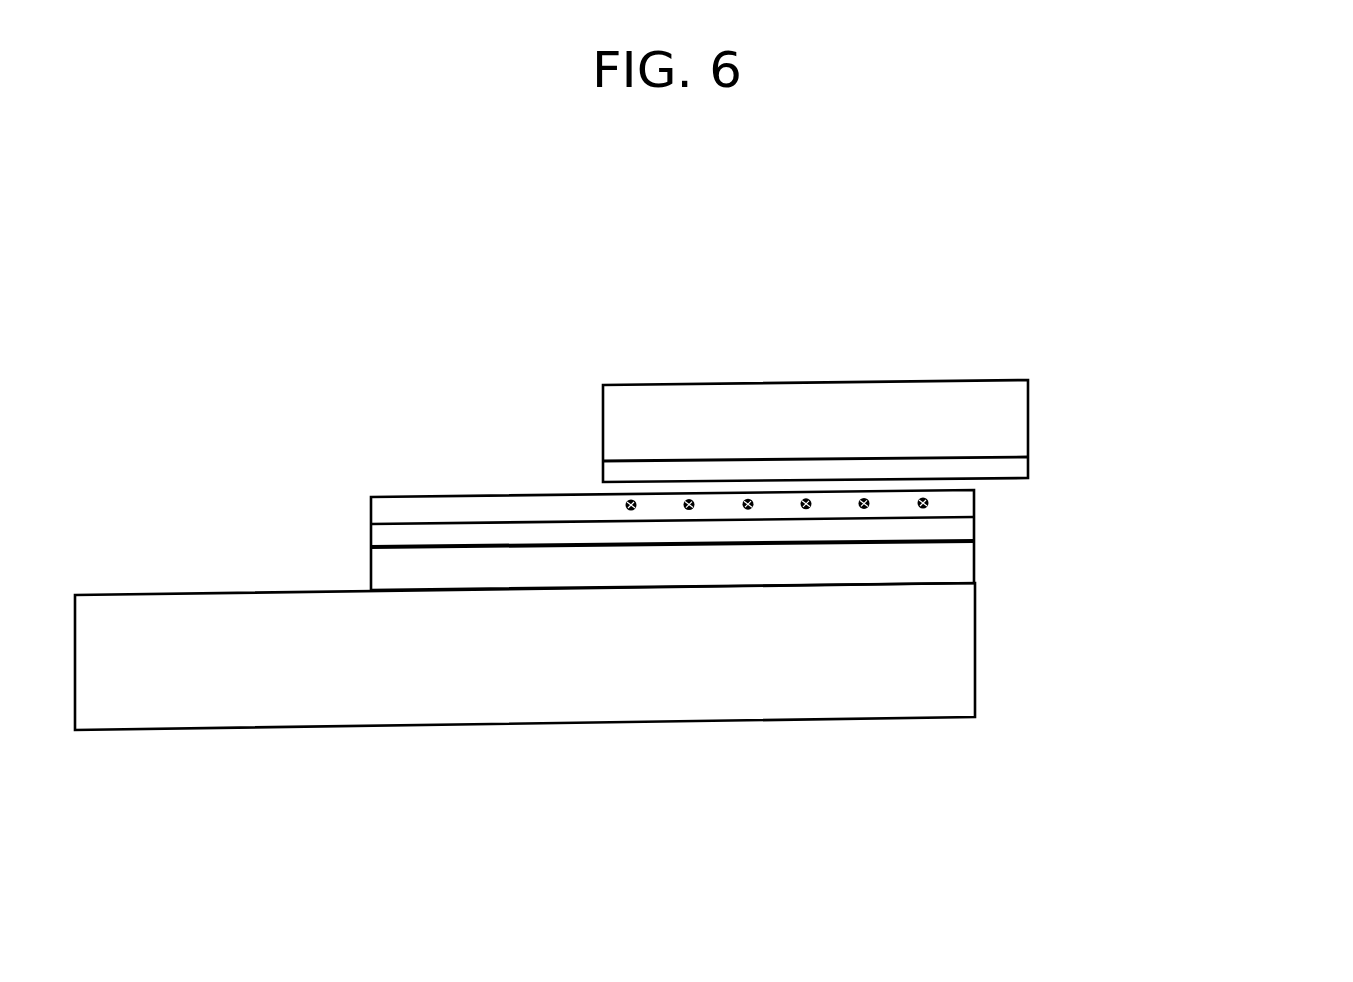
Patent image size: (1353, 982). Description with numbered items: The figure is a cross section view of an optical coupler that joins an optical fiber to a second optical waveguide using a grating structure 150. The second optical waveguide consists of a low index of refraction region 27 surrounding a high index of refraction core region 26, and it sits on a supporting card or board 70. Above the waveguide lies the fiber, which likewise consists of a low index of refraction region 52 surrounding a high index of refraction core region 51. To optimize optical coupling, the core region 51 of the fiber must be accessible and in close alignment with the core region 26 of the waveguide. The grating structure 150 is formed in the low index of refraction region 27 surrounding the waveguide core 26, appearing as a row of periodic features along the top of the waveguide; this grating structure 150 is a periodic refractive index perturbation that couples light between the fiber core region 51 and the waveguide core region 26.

The grating structure 150 is at (602, 503).
The low index of refraction region 52 is at (1012, 407).
The core region 51 is at (1015, 466).
The core region 26 is at (955, 526).
The low index of refraction region 27 is at (955, 567).
The card / board 70 is at (962, 669).